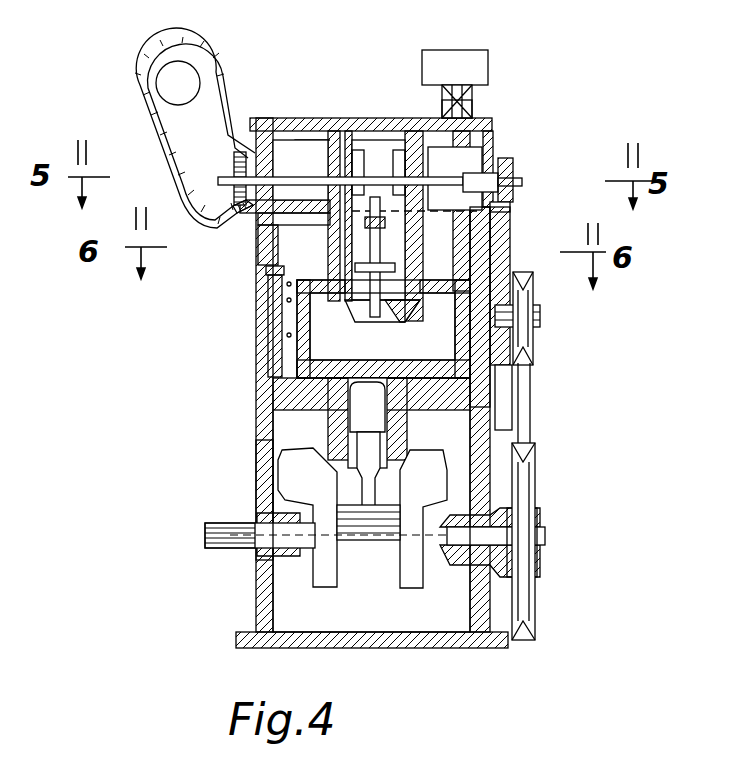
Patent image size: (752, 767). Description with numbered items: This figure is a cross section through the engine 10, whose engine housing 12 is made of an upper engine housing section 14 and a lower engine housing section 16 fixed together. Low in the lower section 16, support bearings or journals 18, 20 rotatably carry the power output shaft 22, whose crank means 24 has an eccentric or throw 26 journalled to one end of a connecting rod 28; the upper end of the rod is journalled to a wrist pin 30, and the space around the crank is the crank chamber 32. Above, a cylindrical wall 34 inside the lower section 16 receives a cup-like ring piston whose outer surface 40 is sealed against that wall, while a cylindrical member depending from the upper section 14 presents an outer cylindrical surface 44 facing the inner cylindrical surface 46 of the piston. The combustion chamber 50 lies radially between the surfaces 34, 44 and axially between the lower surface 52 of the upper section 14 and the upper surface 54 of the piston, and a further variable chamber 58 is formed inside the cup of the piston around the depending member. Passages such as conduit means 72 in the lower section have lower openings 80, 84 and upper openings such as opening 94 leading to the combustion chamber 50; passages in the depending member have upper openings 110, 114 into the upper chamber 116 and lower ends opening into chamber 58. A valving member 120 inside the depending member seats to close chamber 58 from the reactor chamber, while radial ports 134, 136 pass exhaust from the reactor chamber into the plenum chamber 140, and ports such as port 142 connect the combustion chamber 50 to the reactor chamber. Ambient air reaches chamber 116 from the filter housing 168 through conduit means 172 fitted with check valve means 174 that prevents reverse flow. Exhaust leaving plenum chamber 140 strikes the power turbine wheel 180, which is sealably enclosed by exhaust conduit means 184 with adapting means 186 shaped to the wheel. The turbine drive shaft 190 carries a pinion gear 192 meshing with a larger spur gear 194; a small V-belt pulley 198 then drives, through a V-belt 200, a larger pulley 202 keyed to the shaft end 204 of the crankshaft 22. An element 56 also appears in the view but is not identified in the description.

The engine 10 is at (193, 490).
The engine housing 12 is at (256, 592).
The upper engine housing section 14 is at (283, 118).
The lower engine housing section 16 is at (257, 472).
The support bearing or journal 18 is at (268, 525).
The support bearing or journal 20 is at (540, 538).
The power output shaft 22 is at (232, 552).
The crank means 24 is at (415, 600).
The eccentric or throw 26 is at (367, 565).
The connecting rod 28 is at (380, 498).
The wrist pin 30 is at (343, 462).
The crank chamber or cavity 32 is at (445, 613).
The cylindrical wall 34 is at (272, 262).
The outer surface of piston 40 is at (300, 338).
The outer cylindrical surface 44 is at (480, 240).
The inner cylindrical wall or surface 46 is at (425, 355).
The combustion chamber 50 is at (262, 250).
The lower surface of upper housing section 52 is at (495, 235).
The top or upper surface of ring piston 54 is at (512, 255).
The cylinder block 56 is at (333, 418).
The variable chamber 58 is at (292, 345).
The passage or conduit means 72 is at (270, 312).
The lower opening 80 is at (283, 400).
The lower opening 84 is at (505, 395).
The upper opening 94 is at (283, 262).
The upper opening of passage 110 is at (340, 150).
The upper opening of passage 114 is at (410, 150).
The upper chamber 116 is at (305, 127).
The valving member 120 is at (380, 307).
The radially directed port 134 is at (357, 150).
The radially directed port 136 is at (372, 155).
The second chamber (plenum chamber) 140 is at (472, 158).
The radially directed port 142 is at (362, 302).
The housing of air intake assembly 168 is at (492, 72).
The conduit means 172 is at (474, 100).
The check valve means 174 is at (476, 112).
The power turbine wheel 180 is at (236, 168).
The exhaust conduit means 184 is at (218, 60).
The adapting means 186 is at (235, 212).
The turbine drive shaft 190 is at (276, 176).
The pinion gear 192 is at (514, 166).
The spur gear 194 is at (500, 215).
The V-belt pulley 198 is at (535, 350).
The V-belt 200 is at (530, 425).
The larger pulley 202 is at (540, 478).
The shaft end of crankshaft 204 is at (540, 522).